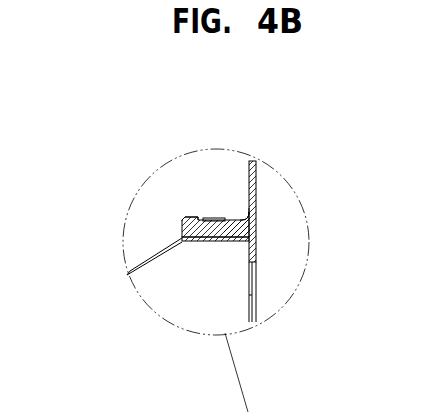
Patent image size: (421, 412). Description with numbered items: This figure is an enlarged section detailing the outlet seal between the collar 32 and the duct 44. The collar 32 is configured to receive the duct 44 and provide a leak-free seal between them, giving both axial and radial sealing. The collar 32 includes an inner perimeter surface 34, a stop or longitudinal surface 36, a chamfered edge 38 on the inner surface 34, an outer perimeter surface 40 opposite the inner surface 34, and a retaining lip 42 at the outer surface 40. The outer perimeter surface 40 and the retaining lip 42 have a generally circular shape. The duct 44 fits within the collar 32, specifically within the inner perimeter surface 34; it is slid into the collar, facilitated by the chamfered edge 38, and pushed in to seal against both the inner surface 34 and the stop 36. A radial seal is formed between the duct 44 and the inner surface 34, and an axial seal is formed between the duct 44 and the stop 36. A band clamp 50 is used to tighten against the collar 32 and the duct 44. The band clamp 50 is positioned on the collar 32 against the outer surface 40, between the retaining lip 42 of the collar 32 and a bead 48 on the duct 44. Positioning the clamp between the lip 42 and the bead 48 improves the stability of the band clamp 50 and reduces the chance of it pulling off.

The collar 32 is at (228, 230).
The inner perimeter surface 34 is at (218, 240).
The stop or longitudinal surface 36 is at (248, 257).
The chamfered edge 38 is at (191, 236).
The outer perimeter surface 40 is at (238, 227).
The retaining lip 42 is at (193, 216).
The duct 44 is at (132, 271).
The bead 48 is at (244, 232).
The band clamp 50 is at (213, 217).